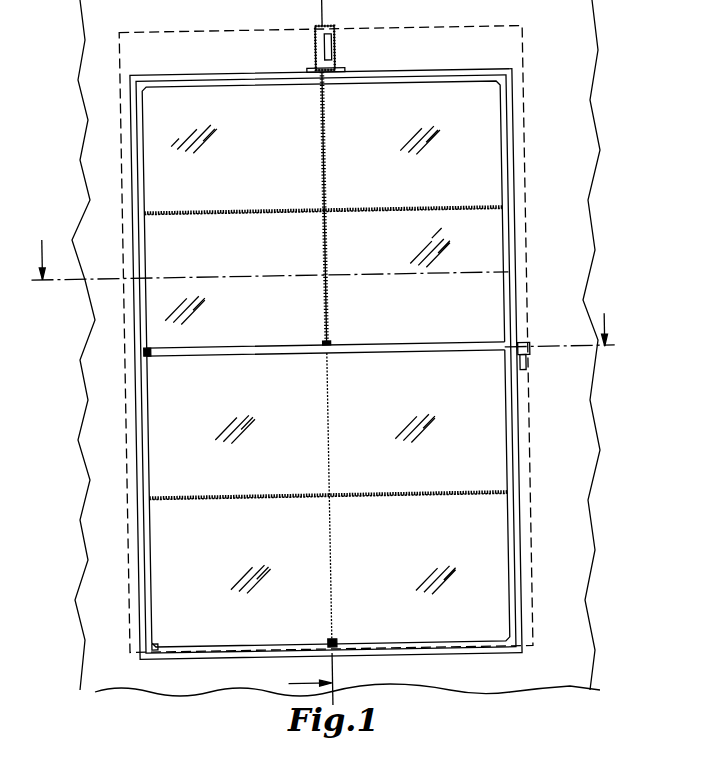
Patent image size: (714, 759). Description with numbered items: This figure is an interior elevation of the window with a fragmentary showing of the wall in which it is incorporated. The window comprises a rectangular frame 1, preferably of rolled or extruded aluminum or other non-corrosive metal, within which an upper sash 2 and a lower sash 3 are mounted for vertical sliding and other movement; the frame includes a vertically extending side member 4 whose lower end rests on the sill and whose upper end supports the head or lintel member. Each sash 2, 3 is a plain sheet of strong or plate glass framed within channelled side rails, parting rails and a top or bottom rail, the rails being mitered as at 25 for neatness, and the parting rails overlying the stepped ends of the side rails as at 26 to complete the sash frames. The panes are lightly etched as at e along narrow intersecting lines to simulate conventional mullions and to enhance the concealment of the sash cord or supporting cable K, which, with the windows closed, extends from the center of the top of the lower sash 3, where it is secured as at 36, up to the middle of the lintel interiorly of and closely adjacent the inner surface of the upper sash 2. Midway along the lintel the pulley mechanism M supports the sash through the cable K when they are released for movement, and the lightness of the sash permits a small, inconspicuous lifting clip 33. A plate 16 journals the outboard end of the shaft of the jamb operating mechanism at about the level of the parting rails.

The rectangular frame 1 is at (516, 596).
The upper sash 2 is at (494, 158).
The lower sash 3 is at (497, 453).
The side member 4 is at (306, 679).
The plate 16 is at (532, 349).
The mitered corner 25 is at (148, 647).
The parting rail overlap 26 is at (143, 349).
The lifting clip 33 is at (335, 643).
The cable attachment to parting rail 36 is at (332, 345).
The sash cord or supporting cable K is at (334, 127).
The pulley mechanism M is at (343, 35).
The light etchings e is at (231, 211).